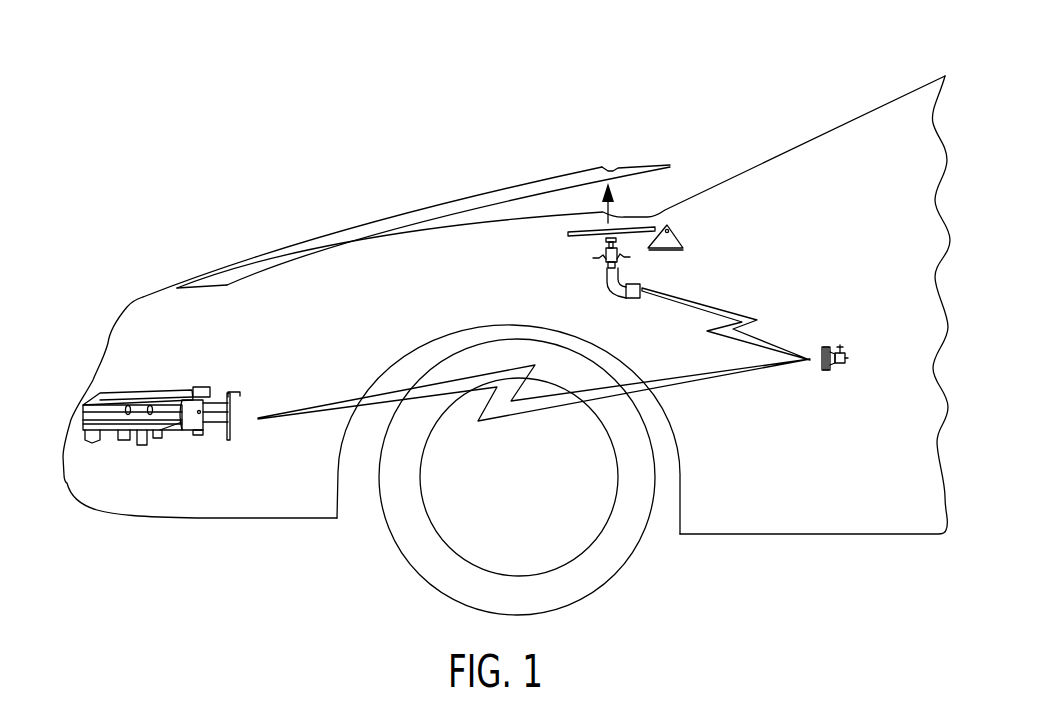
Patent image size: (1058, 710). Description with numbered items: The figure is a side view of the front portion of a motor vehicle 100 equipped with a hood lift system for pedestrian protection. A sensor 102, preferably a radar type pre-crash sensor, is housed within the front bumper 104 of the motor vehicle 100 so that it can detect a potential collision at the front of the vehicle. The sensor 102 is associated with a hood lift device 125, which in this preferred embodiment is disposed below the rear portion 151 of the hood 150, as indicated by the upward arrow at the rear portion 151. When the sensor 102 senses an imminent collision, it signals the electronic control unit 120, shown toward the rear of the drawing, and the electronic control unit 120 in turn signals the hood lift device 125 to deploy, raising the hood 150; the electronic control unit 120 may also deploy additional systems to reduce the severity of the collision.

The motor vehicle 100 is at (718, 63).
The sensor 102 is at (85, 412).
The front bumper 104 is at (73, 492).
The electronic control unit (ECU) 120 is at (827, 372).
The hood lift device 125 is at (603, 280).
The hood 150 is at (420, 208).
The rear portion 151 is at (613, 170).